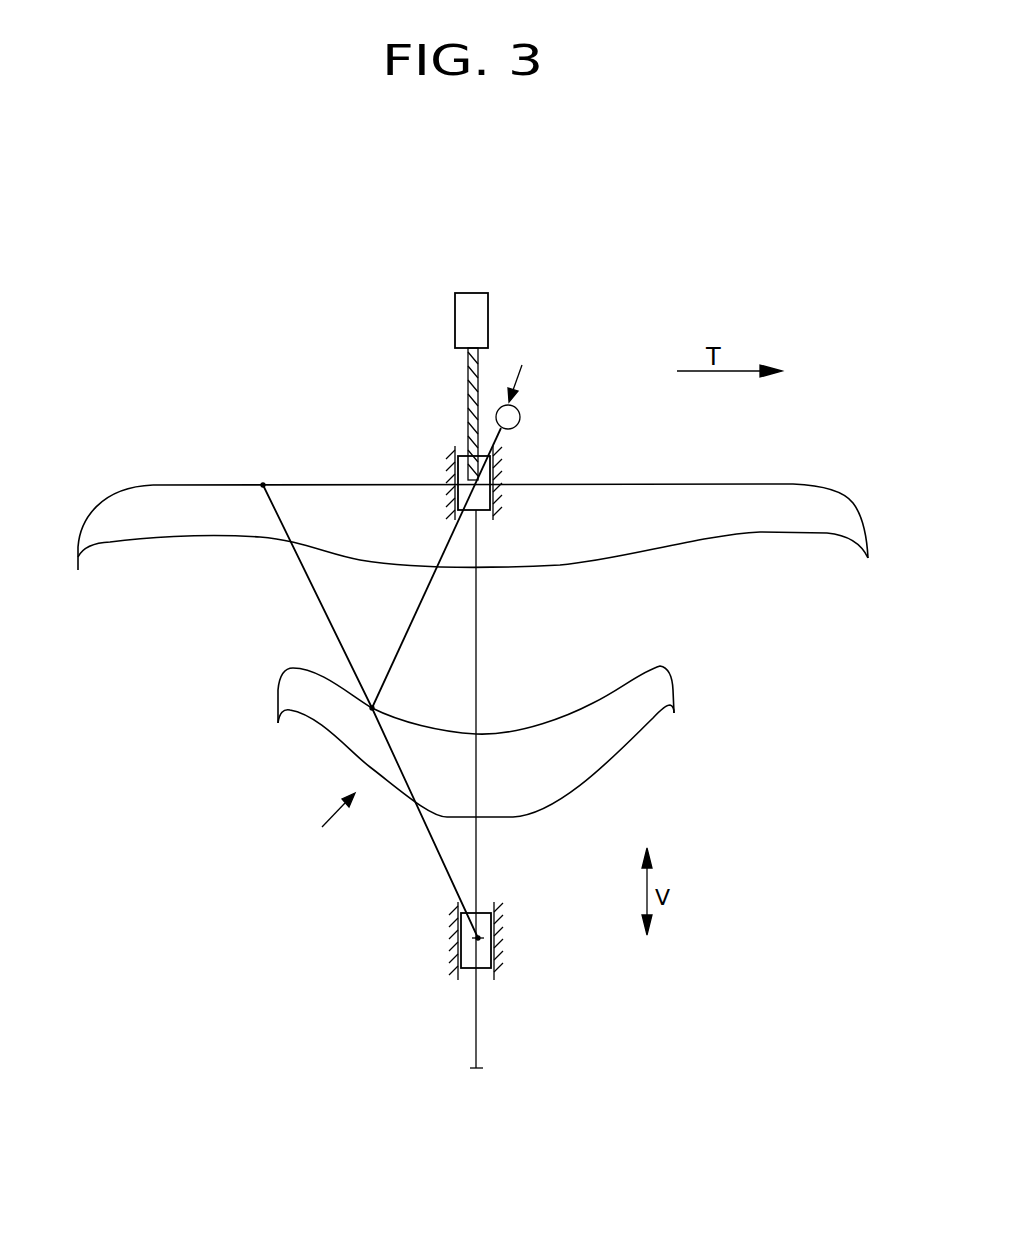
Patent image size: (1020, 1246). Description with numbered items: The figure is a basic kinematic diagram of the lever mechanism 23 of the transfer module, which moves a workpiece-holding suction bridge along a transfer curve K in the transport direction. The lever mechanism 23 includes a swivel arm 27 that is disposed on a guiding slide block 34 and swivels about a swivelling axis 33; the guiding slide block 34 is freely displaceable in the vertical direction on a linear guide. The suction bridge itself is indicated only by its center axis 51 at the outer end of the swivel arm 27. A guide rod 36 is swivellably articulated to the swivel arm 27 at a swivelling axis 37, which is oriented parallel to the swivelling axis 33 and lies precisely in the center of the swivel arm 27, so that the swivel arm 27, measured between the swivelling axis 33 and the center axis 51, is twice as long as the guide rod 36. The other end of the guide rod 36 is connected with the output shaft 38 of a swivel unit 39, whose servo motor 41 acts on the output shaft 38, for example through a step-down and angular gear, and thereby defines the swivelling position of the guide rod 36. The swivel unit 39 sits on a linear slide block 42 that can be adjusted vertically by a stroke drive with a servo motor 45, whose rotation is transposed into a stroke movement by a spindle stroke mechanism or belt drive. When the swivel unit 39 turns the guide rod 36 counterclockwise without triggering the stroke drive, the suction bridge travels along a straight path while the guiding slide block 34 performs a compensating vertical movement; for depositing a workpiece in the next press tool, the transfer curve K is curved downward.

The lever mechanism 23 is at (321, 827).
The swivel arm 27 is at (310, 587).
The swivelling axis 33 is at (475, 942).
The guiding slide block 34 is at (490, 923).
The guide rod 36 is at (411, 620).
The swivelling axis 37 is at (372, 708).
The output shaft 38 is at (477, 487).
The swivel unit 39 is at (525, 369).
The servo motor 41 is at (518, 411).
The linear slide block 42 is at (458, 460).
The servo motor 45 is at (486, 296).
The center axis 51 is at (263, 485).
The transfer curve K is at (853, 503).